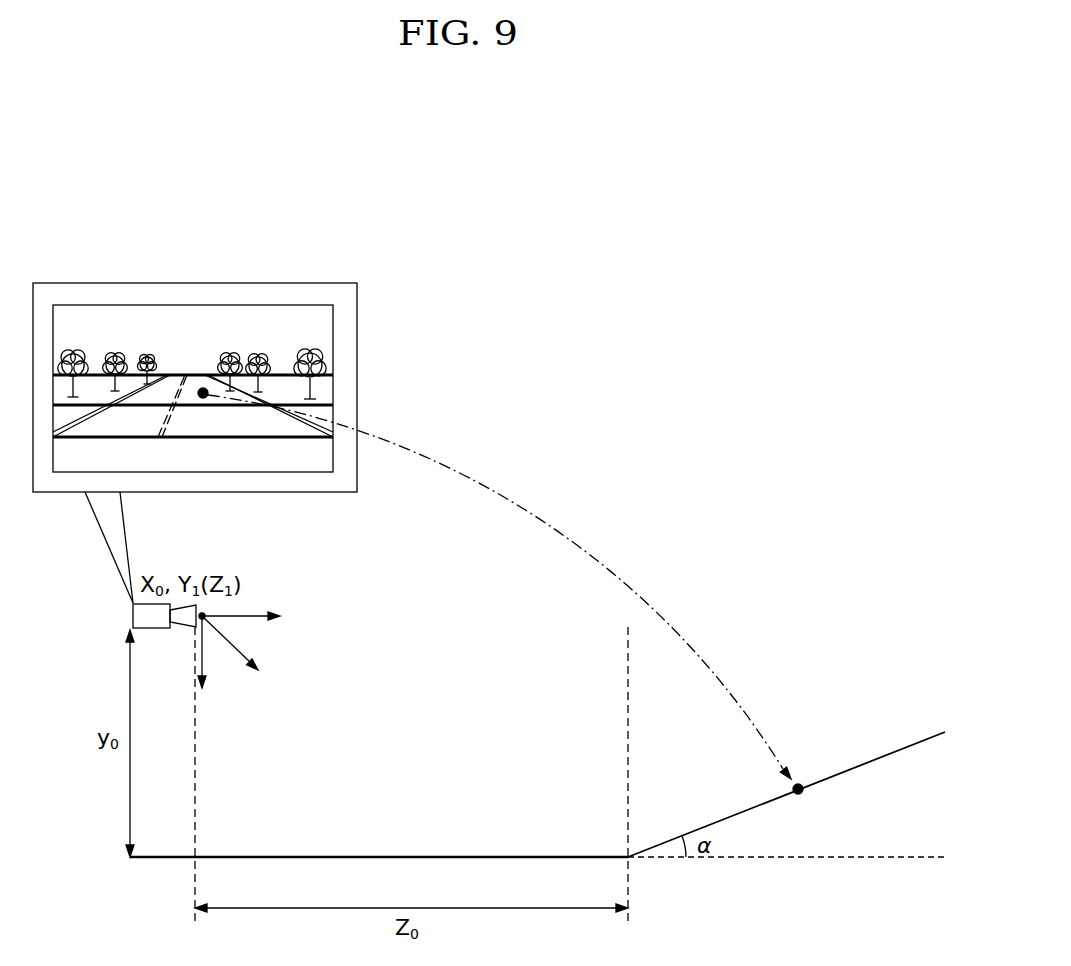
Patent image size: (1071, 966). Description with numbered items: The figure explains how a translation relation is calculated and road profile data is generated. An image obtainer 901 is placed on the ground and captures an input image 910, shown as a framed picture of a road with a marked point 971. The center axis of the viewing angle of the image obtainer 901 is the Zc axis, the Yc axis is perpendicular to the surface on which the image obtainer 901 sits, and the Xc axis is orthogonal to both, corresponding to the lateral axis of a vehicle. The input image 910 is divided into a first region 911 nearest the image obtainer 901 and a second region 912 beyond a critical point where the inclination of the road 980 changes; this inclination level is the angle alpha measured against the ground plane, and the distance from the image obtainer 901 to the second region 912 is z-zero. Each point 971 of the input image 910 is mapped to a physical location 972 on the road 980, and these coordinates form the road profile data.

The input image 910 is at (80, 305).
The point 971 is at (204, 388).
The image obtainer 901 is at (133, 615).
The first region 911 is at (383, 622).
The second region 912 is at (759, 637).
The road 980 is at (155, 860).
The physical location 972 is at (803, 795).